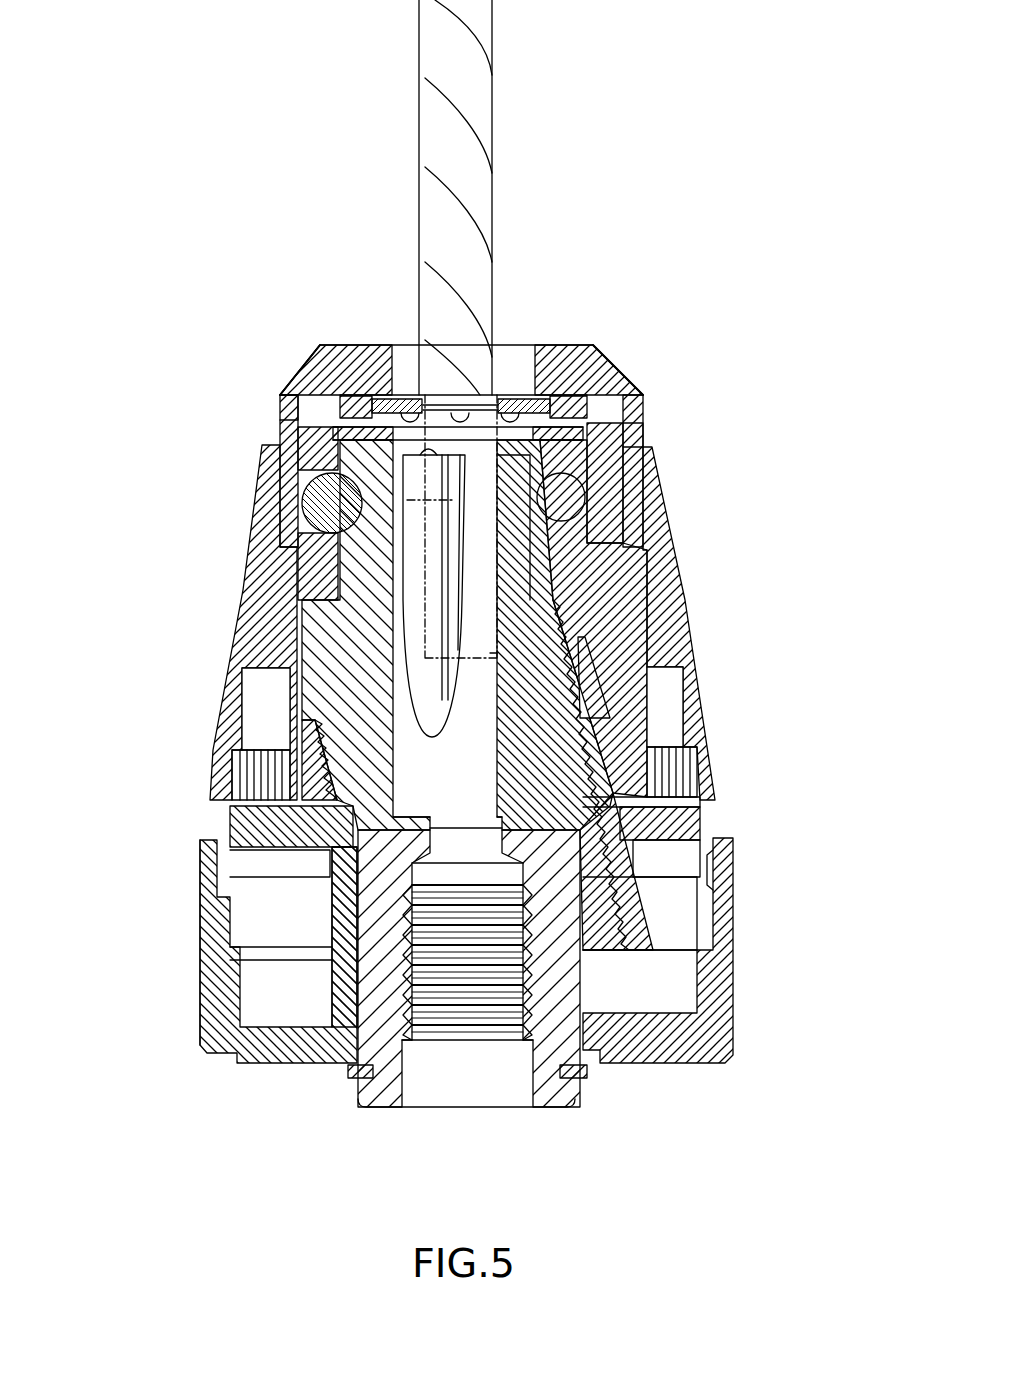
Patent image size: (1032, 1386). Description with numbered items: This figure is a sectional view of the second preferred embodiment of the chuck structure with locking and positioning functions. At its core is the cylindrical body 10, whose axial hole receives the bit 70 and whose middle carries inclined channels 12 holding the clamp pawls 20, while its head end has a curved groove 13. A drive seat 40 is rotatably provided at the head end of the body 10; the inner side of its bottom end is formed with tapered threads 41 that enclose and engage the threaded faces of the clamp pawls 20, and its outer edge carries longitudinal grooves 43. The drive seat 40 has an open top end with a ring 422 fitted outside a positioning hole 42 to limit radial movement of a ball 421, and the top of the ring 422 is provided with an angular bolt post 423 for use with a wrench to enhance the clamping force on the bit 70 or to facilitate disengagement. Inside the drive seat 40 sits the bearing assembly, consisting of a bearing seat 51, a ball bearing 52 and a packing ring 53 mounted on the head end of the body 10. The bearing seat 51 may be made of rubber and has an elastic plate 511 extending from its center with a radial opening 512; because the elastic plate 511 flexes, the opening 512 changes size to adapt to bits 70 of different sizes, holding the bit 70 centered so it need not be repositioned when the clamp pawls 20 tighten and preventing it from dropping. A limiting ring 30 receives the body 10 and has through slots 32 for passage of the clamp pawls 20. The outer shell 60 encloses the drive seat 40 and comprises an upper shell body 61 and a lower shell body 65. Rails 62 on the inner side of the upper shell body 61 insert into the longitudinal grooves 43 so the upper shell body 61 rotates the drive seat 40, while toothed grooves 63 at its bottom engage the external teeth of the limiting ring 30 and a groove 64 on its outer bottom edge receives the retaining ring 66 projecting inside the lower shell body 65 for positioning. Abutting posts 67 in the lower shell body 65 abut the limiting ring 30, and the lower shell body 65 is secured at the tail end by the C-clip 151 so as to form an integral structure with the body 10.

The bit 70 is at (470, 105).
The bearing seat 51 is at (435, 380).
The ball bearing 52 is at (333, 347).
The packing ring 53 is at (312, 392).
The elastic plate 511 is at (560, 400).
The radial opening 512 is at (505, 398).
The positioning hole 42 is at (455, 457).
The ball 421 is at (322, 495).
The ring 422 is at (643, 440).
The angular bolt post 423 is at (627, 395).
The body 10 is at (501, 817).
The C-clip 151 is at (590, 1068).
The clamp pawls 20 is at (601, 566).
The inclined channels 12 is at (583, 640).
The curved groove 13 is at (560, 487).
The drive seat 40 is at (620, 566).
The limiting ring 30 is at (256, 826).
The through slots 32 is at (643, 827).
The outer shell 60 is at (464, 796).
The upper shell body 61 is at (237, 620).
The rails 62 is at (288, 605).
The longitudinal grooves 43 is at (293, 702).
The tapered threads 41 is at (303, 757).
The toothed grooves 63 is at (667, 773).
The groove 64 is at (727, 847).
The lower shell body 65 is at (733, 935).
The retaining ring 66 is at (213, 897).
The abutting posts 67 is at (340, 990).